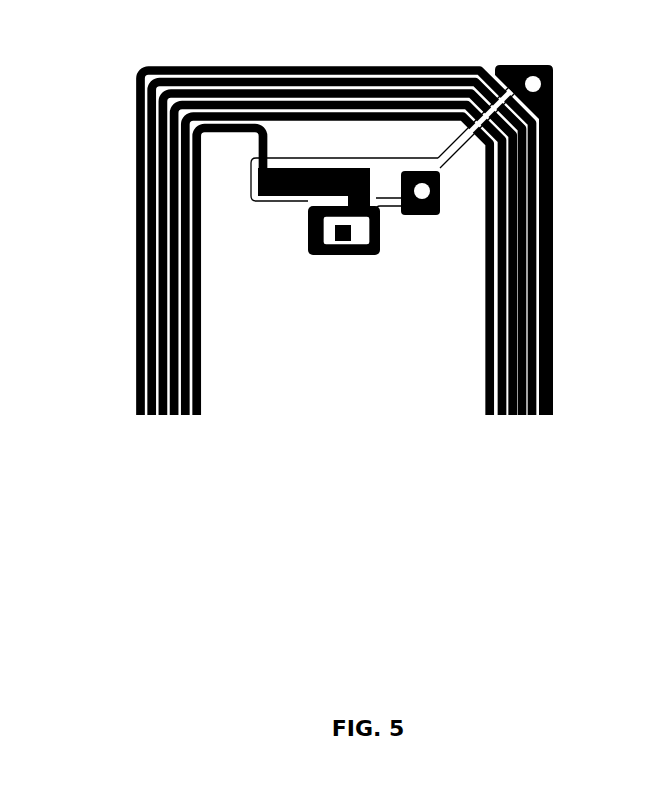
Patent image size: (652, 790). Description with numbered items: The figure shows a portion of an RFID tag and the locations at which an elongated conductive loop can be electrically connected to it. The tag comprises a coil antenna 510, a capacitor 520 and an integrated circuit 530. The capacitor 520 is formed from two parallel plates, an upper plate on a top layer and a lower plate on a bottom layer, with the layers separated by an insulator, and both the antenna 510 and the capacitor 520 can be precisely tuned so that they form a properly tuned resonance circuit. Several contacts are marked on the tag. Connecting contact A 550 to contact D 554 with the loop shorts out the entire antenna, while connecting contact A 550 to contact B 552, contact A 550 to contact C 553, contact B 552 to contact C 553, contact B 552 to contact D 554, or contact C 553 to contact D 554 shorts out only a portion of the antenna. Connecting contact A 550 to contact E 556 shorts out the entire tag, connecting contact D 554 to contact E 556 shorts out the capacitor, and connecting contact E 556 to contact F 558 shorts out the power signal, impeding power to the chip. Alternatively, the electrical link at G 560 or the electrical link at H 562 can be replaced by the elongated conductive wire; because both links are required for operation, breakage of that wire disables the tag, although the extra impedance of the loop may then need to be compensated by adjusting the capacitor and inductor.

The coil antenna 510 is at (506, 410).
The capacitor 520 is at (315, 160).
The integrated circuit 530 is at (335, 248).
The contact A 550 is at (534, 74).
The contact B 552 is at (236, 70).
The contact C 553 is at (164, 264).
The contact D 554 is at (222, 127).
The contact E 556 is at (258, 196).
The contact F 558 is at (305, 242).
The electrical link G 560 is at (301, 200).
The electrical link H 562 is at (442, 142).